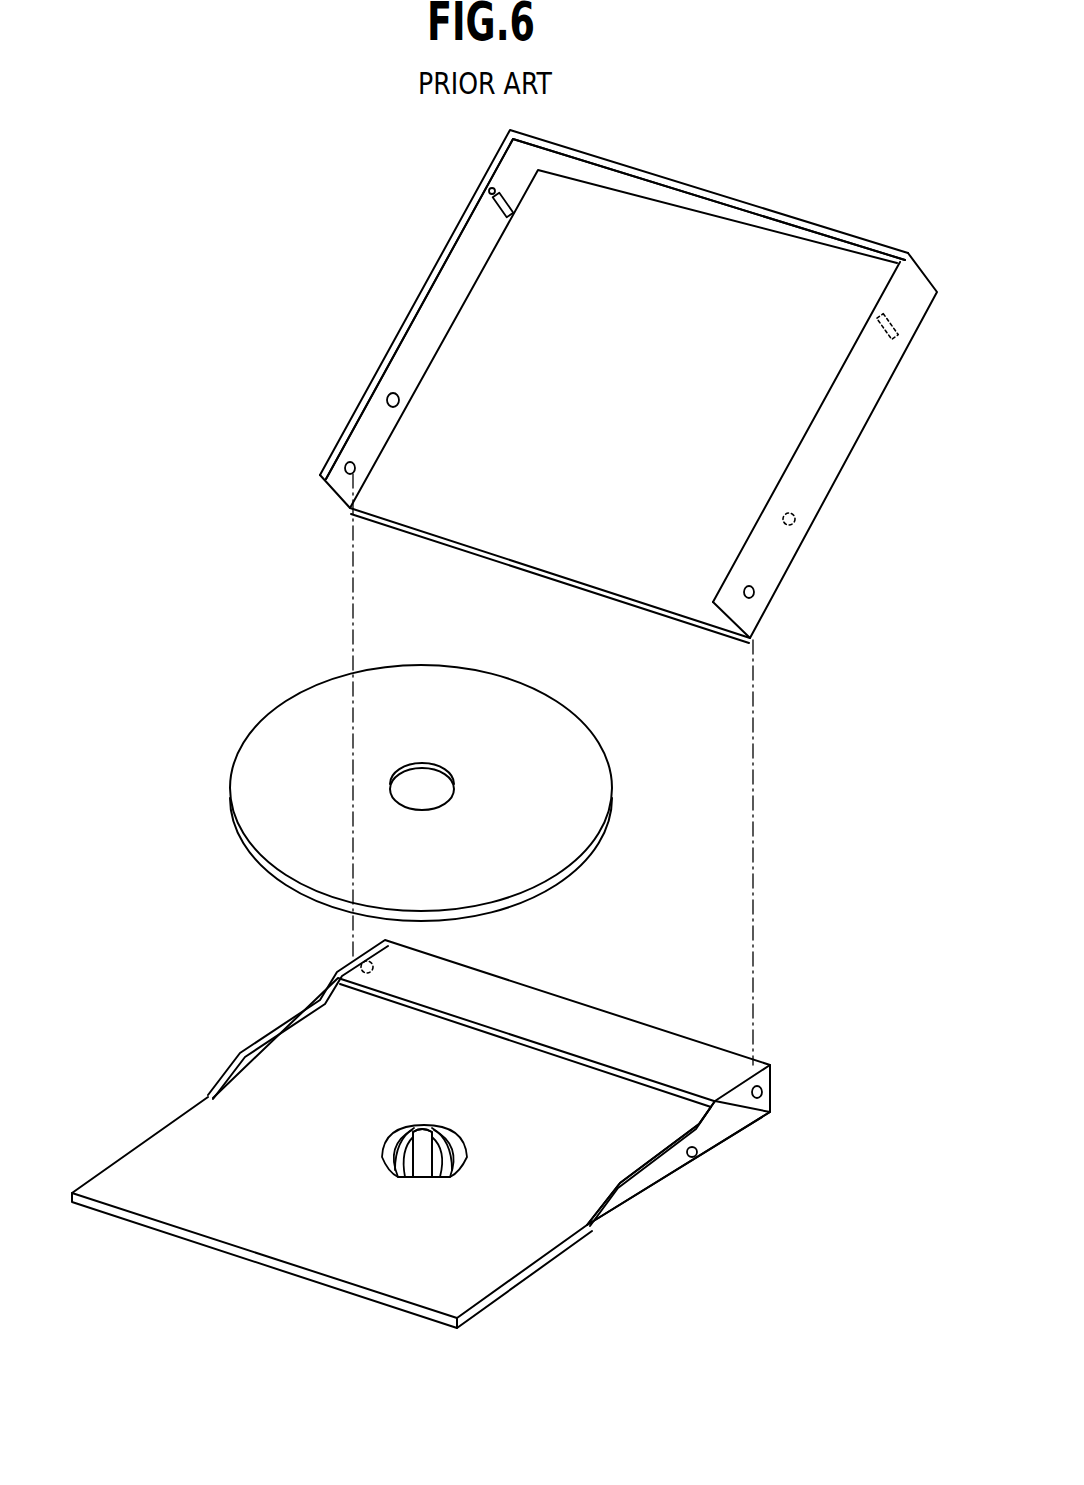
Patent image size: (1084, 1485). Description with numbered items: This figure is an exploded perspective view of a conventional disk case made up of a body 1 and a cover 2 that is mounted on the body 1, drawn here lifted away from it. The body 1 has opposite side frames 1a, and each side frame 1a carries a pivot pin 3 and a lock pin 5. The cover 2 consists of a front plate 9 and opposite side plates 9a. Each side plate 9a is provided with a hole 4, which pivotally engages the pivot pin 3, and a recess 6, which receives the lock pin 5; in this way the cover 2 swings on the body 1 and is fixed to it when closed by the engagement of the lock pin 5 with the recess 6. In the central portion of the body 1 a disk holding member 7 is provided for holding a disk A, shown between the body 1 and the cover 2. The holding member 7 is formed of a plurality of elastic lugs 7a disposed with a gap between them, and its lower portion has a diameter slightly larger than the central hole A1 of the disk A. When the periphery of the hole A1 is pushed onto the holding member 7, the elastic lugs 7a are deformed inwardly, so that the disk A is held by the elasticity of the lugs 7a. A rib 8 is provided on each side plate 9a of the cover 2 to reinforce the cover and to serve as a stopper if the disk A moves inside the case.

The body 1 is at (175, 1083).
The side frame 1a is at (639, 1190).
The cover 2 is at (426, 221).
The pivot pin 3 is at (360, 962).
The hole 4 is at (345, 465).
The lock pin 5 is at (700, 1156).
The recess 6 is at (393, 400).
The disk holding member 7 is at (465, 1137).
The elastic lugs 7a is at (407, 1127).
The rib 8 is at (497, 182).
The front plate 9 is at (708, 208).
The side plate 9a is at (418, 340).
The disk A is at (306, 689).
The central hole A1 is at (410, 788).